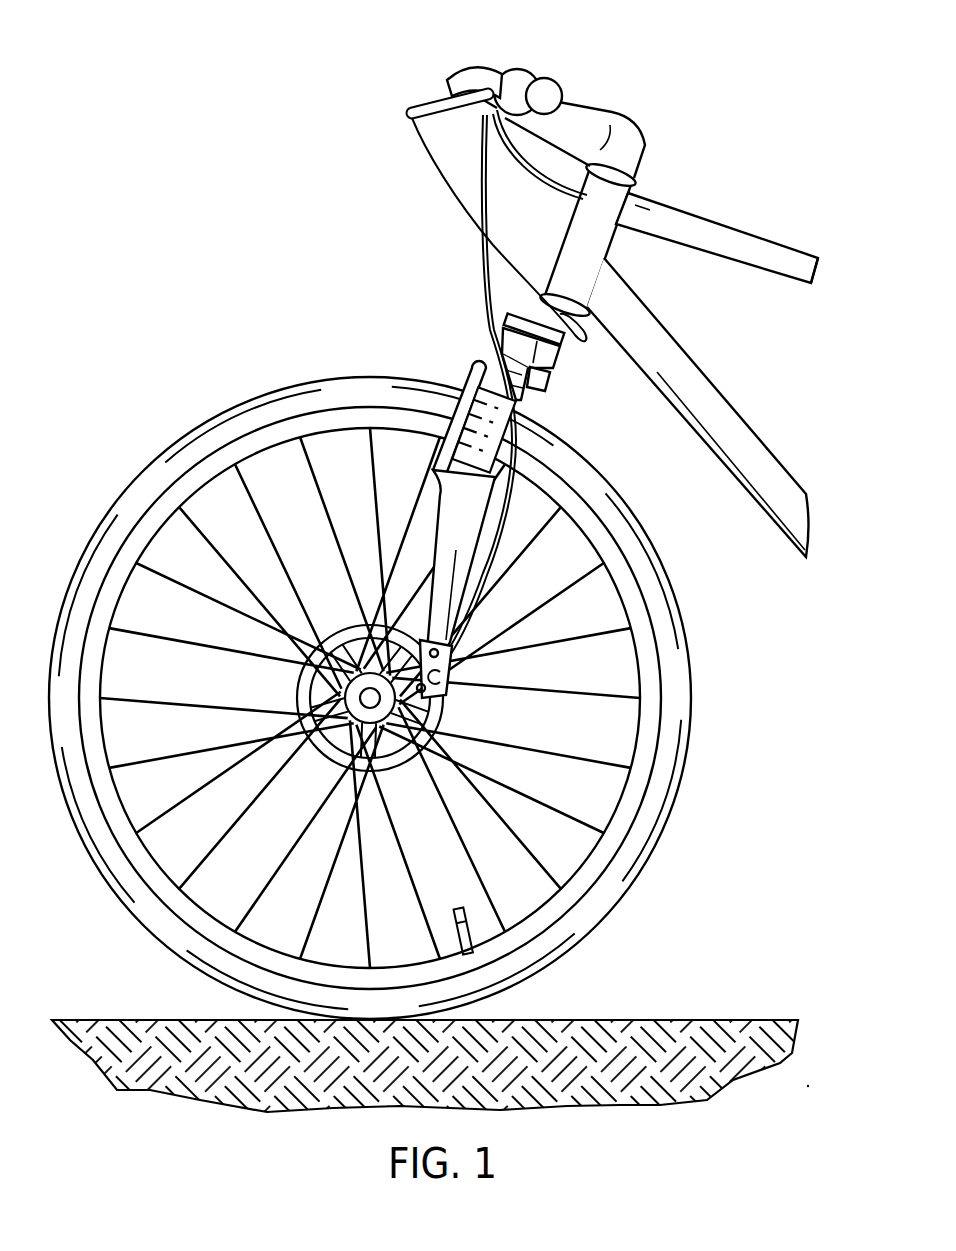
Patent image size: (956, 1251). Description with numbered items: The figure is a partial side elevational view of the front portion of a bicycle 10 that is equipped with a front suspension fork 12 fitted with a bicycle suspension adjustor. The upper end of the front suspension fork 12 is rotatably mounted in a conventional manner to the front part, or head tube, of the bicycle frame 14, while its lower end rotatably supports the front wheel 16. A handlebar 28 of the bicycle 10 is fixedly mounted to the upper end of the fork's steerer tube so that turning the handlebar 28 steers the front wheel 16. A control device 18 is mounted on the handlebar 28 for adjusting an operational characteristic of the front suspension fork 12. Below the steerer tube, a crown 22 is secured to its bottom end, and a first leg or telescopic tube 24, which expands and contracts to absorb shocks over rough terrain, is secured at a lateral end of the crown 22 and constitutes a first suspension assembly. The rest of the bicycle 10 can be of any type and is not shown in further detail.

The bicycle 10 is at (744, 168).
The front suspension fork 12 is at (456, 365).
The bicycle frame 14 is at (620, 252).
The front wheel 16 is at (250, 386).
The control device 18 is at (470, 68).
The crown 22 is at (500, 310).
The first leg 24 is at (538, 404).
The handlebar 28 is at (518, 87).